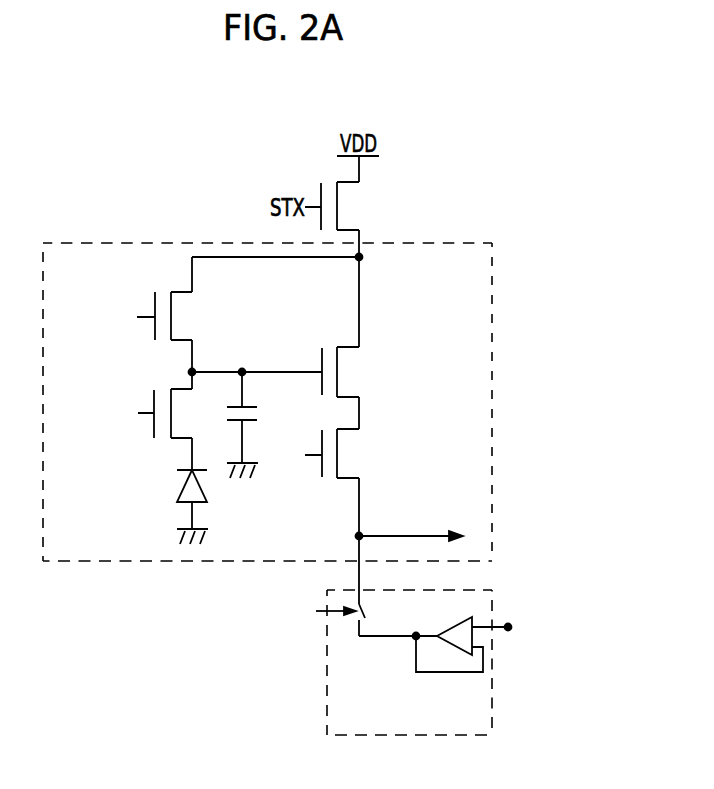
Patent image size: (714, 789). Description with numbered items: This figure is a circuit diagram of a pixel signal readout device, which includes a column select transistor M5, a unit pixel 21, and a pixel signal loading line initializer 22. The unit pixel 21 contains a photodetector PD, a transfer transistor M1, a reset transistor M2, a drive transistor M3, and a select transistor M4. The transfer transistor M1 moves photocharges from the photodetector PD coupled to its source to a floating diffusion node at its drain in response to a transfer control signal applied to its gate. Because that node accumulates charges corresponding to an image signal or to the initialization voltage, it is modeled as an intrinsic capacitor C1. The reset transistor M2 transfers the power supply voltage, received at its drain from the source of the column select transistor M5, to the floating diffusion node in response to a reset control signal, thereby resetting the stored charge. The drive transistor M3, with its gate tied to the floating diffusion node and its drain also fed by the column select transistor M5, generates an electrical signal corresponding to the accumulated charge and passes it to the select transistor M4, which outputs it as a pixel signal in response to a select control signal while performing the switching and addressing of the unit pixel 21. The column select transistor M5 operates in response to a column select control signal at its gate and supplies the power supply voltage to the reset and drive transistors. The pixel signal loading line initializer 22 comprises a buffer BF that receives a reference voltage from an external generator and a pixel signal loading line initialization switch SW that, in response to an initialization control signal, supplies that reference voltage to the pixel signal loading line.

The unit pixel 21 is at (267, 410).
The pixel signal loading line initializer 22 is at (439, 649).
The transfer transistor M1 is at (174, 413).
The reset transistor M2 is at (174, 316).
The drive transistor M3 is at (350, 372).
The select transistor M4 is at (342, 453).
The column select transistor M5 is at (342, 206).
The capacitor C1 is at (255, 425).
The photodetector PD is at (178, 507).
The pixel signal loading line initialization switch SW is at (367, 613).
The buffer BF is at (448, 629).